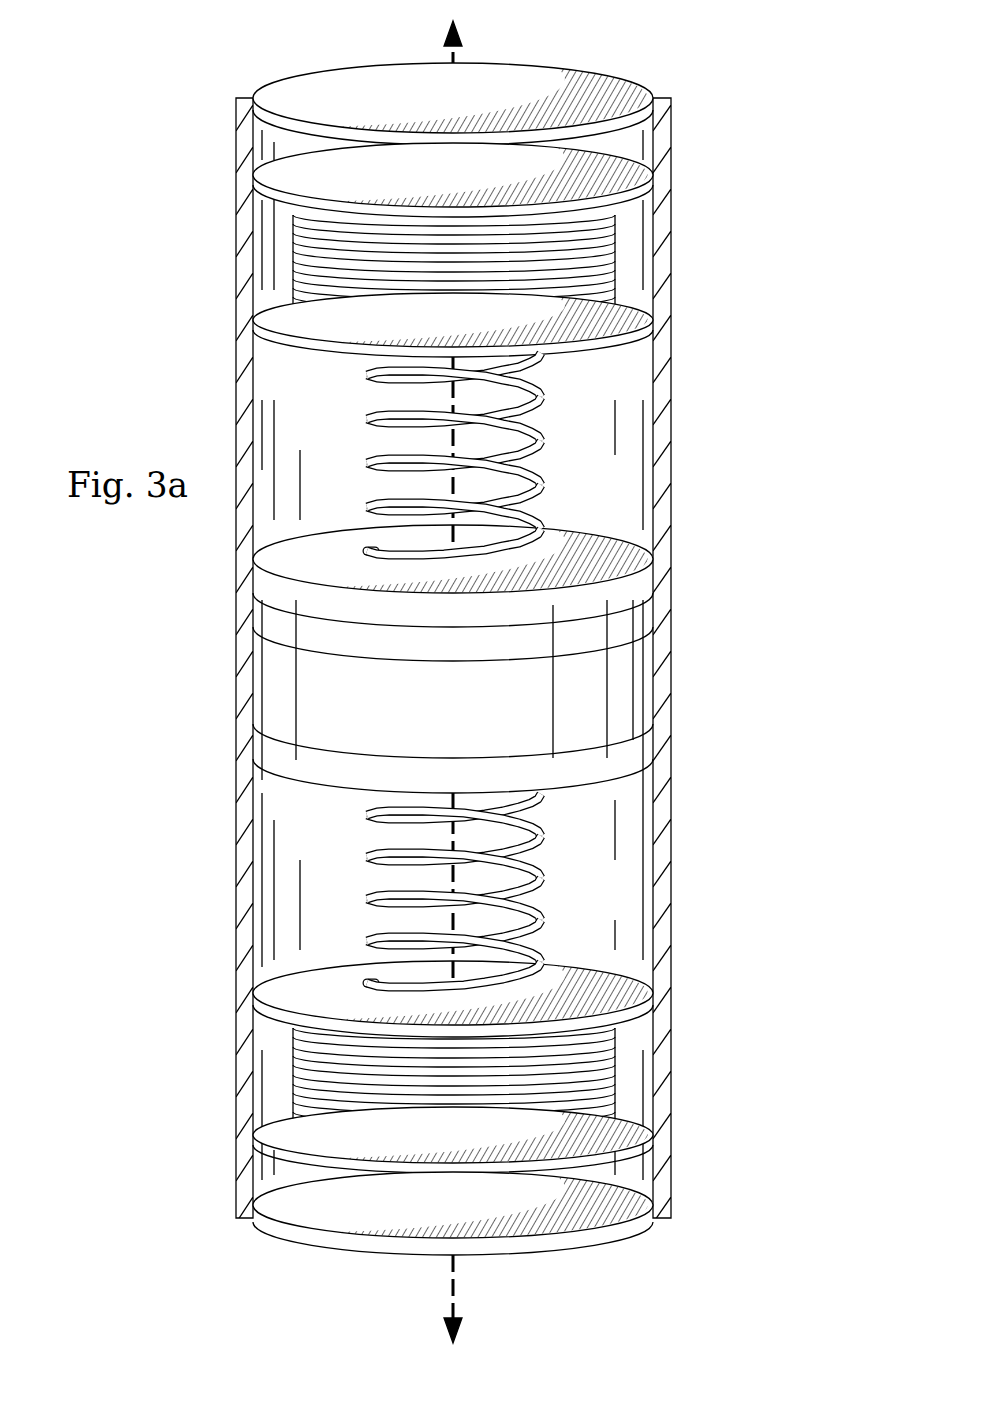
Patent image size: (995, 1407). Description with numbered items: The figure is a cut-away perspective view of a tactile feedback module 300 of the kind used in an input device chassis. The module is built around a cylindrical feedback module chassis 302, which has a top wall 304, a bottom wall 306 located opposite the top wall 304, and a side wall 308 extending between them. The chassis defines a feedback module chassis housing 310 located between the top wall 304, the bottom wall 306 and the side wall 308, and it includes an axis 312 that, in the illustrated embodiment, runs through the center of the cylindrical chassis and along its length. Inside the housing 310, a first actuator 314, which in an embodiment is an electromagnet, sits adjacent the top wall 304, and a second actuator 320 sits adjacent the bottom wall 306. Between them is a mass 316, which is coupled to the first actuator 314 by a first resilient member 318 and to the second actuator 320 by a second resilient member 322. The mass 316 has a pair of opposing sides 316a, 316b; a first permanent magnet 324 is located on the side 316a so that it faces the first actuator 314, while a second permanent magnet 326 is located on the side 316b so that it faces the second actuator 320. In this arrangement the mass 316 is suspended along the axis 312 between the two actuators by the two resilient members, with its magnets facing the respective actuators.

The tactile feedback module 300 is at (491, 609).
The feedback module chassis 302 is at (706, 60).
The top wall 304 is at (306, 86).
The bottom wall 306 is at (277, 1228).
The side wall 308 is at (673, 262).
The feedback module chassis housing 310 is at (268, 905).
The axis 312 is at (452, 1292).
The first actuator 314 is at (290, 276).
The mass 316 is at (404, 667).
The side 316a is at (392, 627).
The side 316b is at (513, 758).
The first resilient member 318 is at (367, 424).
The second actuator 320 is at (617, 1064).
The second resilient member 322 is at (538, 878).
The first permanent magnet 324 is at (573, 540).
The second permanent magnet 326 is at (322, 770).